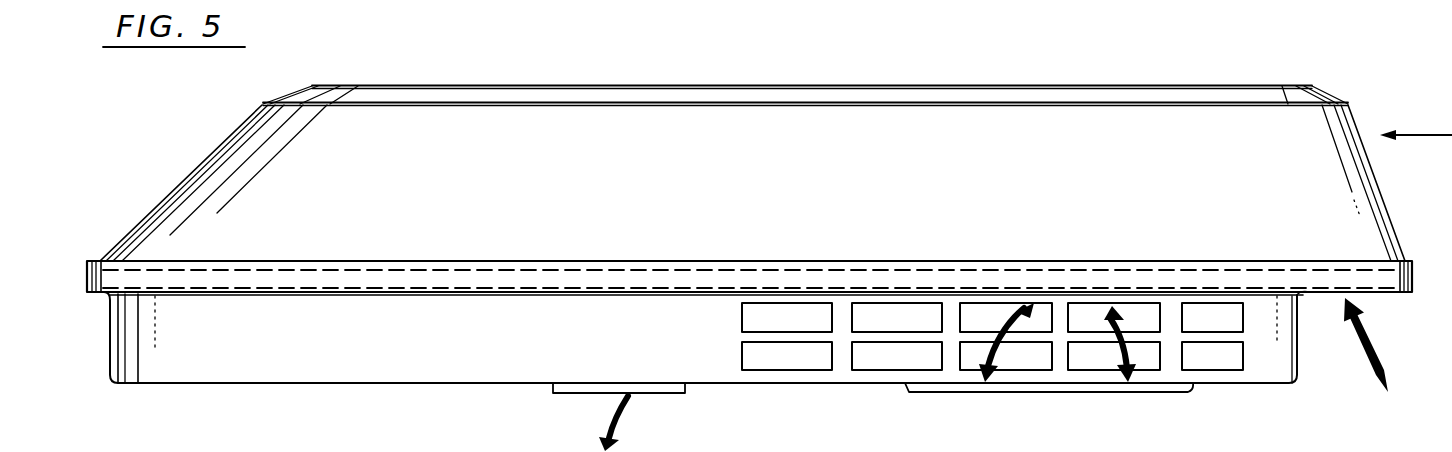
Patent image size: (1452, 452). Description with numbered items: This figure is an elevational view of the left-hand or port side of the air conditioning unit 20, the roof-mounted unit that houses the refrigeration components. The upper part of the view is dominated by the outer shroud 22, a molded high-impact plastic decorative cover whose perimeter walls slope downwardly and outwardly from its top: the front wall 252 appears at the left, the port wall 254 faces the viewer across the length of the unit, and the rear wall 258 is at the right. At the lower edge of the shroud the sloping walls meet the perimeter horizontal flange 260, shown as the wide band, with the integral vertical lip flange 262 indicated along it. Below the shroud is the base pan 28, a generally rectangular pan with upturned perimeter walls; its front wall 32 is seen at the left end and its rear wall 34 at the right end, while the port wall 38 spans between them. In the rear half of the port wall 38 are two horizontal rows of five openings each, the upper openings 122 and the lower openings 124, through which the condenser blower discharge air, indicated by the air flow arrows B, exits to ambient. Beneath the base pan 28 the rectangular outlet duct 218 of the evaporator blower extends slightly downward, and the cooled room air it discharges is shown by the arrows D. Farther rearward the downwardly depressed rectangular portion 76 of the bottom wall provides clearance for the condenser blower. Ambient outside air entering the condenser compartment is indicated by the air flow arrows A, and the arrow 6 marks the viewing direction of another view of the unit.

The air conditioning unit 20 is at (508, 58).
The outer shroud 22 is at (1160, 82).
The port wall 254 is at (851, 108).
The front wall 252 is at (228, 140).
The rear wall 258 is at (1380, 191).
The perimeter horizontal flange 260 is at (461, 259).
The vertical lip flange 262 is at (320, 282).
The front wall 32 is at (110, 334).
The rear wall 34 is at (1302, 353).
The base pan 28 is at (330, 385).
The port wall 38 is at (475, 373).
The upper openings 122 is at (816, 306).
The lower openings 124 is at (858, 362).
The rectangular outlet duct 218 is at (672, 394).
The depressed rectangular portion 76 is at (1100, 394).
The arrow 6 is at (1423, 134).
The air flow arrows A is at (1380, 340).
The air flow arrows B is at (1100, 335).
The arrows D is at (607, 430).